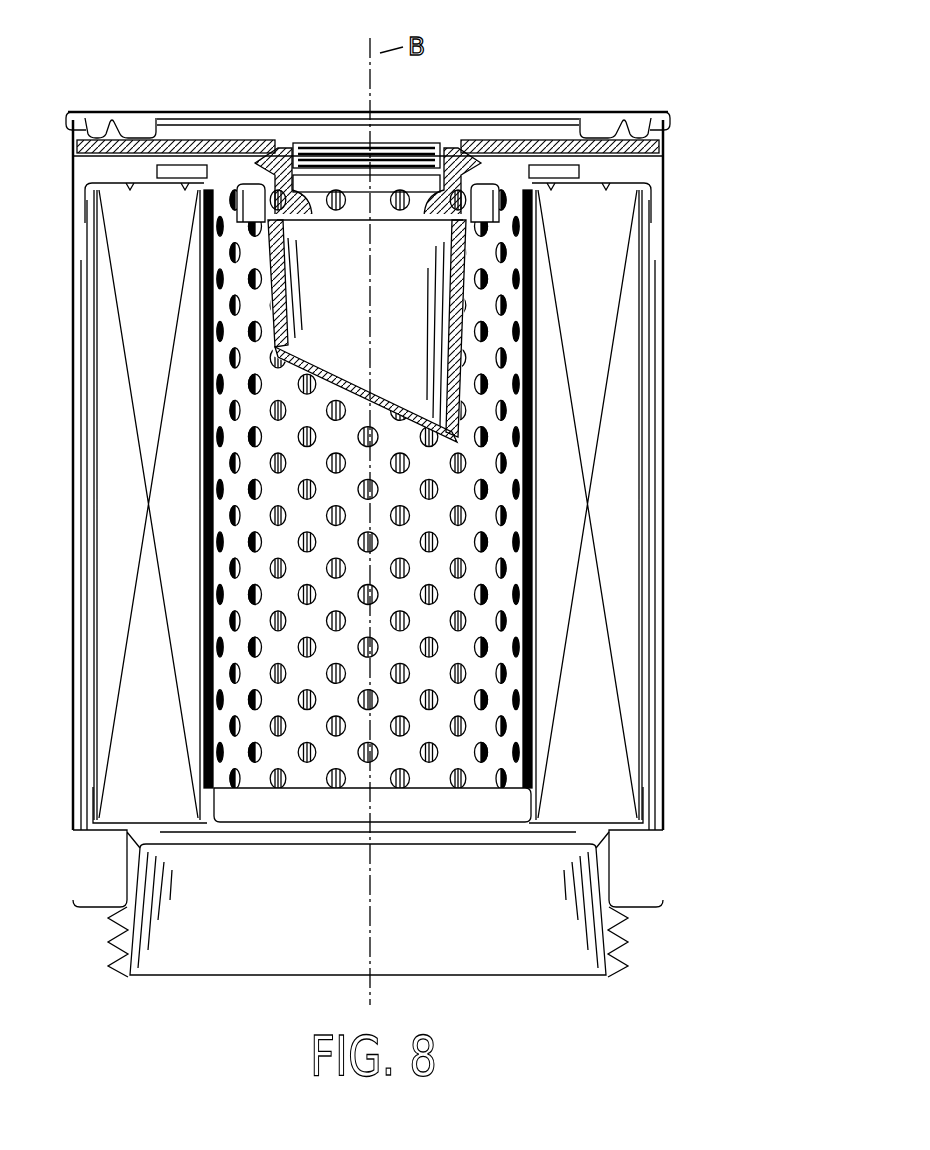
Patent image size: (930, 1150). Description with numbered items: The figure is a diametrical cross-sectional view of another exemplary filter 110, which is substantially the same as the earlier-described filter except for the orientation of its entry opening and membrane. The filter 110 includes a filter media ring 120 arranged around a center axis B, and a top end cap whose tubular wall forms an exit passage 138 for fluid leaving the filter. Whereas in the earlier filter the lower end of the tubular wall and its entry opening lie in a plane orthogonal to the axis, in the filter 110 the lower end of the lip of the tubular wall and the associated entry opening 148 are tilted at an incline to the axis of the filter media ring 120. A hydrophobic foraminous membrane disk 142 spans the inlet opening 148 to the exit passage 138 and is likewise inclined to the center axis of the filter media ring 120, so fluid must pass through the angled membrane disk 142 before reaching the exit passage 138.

The filter 110 is at (728, 77).
The filter media ring 120 is at (608, 244).
The exit passage 138 is at (402, 258).
The hydrophobic foraminous membrane disk 142 is at (386, 406).
The entry opening 148 is at (418, 412).